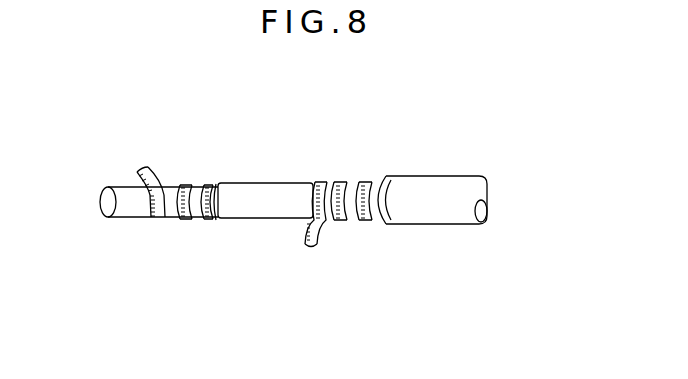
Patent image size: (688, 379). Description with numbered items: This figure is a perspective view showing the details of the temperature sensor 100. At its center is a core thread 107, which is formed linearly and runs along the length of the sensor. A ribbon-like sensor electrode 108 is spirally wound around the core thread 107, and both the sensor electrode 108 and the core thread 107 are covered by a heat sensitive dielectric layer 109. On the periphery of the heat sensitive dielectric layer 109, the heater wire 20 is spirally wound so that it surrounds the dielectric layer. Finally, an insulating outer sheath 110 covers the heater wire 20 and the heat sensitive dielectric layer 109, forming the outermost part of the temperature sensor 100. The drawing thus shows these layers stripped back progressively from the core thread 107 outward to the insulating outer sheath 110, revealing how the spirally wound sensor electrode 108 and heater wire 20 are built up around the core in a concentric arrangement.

The temperature sensor 100 is at (242, 222).
The core thread 107 is at (100, 209).
The sensor electrode 108 is at (148, 167).
The heat sensitive dielectric layer 109 is at (270, 182).
The insulating outer sheath 110 is at (427, 177).
The heater wire 20 is at (312, 246).